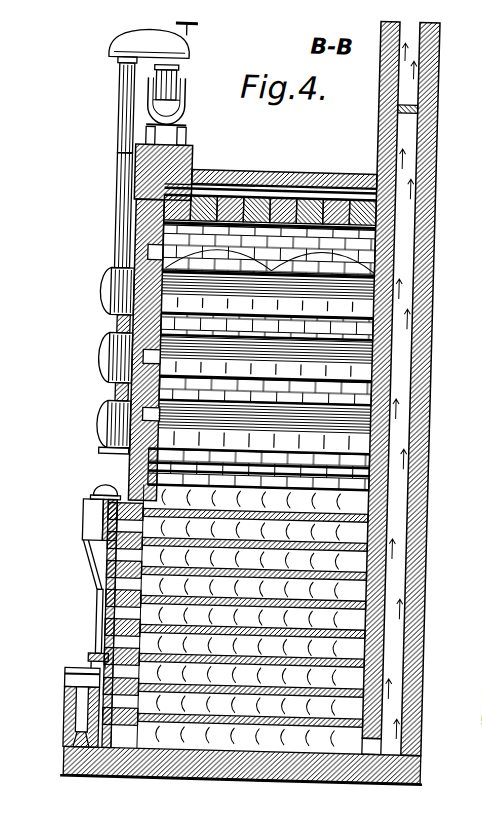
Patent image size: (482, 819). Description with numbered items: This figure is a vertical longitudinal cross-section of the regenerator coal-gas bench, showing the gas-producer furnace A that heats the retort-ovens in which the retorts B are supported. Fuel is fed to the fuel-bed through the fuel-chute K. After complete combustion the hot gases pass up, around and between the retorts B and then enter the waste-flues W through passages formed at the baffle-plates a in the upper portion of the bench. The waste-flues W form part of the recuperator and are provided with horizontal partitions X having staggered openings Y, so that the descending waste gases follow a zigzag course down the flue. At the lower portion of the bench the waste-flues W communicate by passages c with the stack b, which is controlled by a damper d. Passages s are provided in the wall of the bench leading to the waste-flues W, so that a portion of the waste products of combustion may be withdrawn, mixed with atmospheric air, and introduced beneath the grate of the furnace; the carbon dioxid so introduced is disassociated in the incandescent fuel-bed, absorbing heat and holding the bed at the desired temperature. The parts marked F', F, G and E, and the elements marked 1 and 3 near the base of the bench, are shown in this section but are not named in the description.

The gas supply pipe F' is at (127, 87).
The liquid seal cup G is at (183, 120).
The supply pipe F is at (96, 209).
The burner cylinders E is at (112, 293).
The retorts B is at (350, 307).
The gas-producer furnace A is at (145, 472).
The baffle-plates a is at (196, 476).
The damper d is at (420, 117).
The stack b is at (411, 182).
The passages c is at (386, 743).
The fuel-chute K is at (108, 521).
The waste-flues W is at (344, 643).
The horizontal partitions X is at (368, 573).
The staggered openings Y is at (364, 543).
The cock 3 is at (117, 661).
The burner 1 is at (87, 689).
The passages s is at (127, 690).